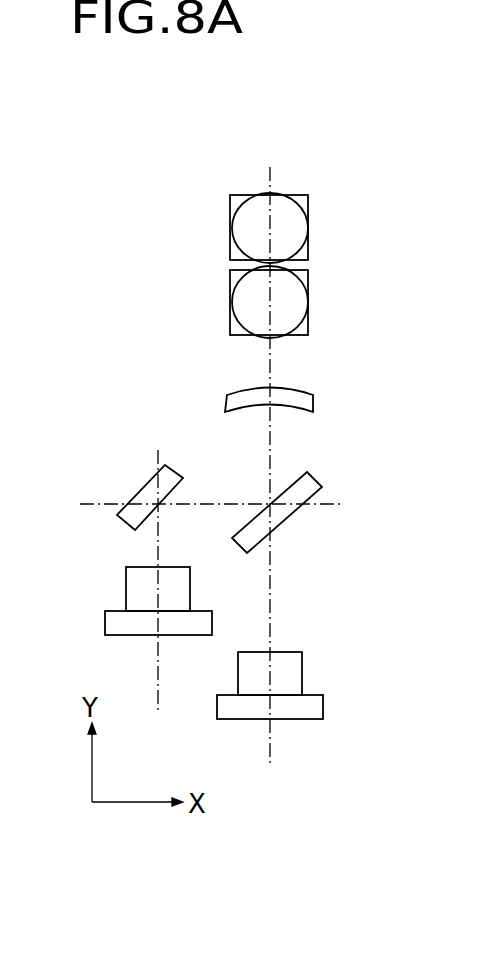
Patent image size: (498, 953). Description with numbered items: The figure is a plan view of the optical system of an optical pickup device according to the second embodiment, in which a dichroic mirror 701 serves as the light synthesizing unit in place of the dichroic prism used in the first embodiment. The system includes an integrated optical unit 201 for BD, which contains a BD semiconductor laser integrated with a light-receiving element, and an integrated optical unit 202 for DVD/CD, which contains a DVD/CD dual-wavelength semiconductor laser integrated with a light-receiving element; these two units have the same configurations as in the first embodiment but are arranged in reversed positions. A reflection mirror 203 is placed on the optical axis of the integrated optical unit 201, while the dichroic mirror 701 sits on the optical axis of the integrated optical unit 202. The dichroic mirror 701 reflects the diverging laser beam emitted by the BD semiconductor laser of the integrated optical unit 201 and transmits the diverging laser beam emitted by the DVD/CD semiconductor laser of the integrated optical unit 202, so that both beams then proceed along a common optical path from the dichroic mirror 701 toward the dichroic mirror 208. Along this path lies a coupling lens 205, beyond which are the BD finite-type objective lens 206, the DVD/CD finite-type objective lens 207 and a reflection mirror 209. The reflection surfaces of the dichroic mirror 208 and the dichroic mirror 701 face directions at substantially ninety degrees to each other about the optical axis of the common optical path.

The integrated optical unit for BD 201 is at (105, 621).
The integrated optical unit for DVD/CD 202 is at (323, 706).
The reflection mirror 203 is at (140, 490).
The coupling lens 205 is at (313, 403).
The BD finite-type objective lens 206 is at (230, 303).
The DVD/CD finite-type objective lens 207 is at (230, 228).
The dichroic mirror 208 is at (308, 320).
The reflection mirror 209 is at (308, 203).
The dichroic mirror 701 is at (285, 523).